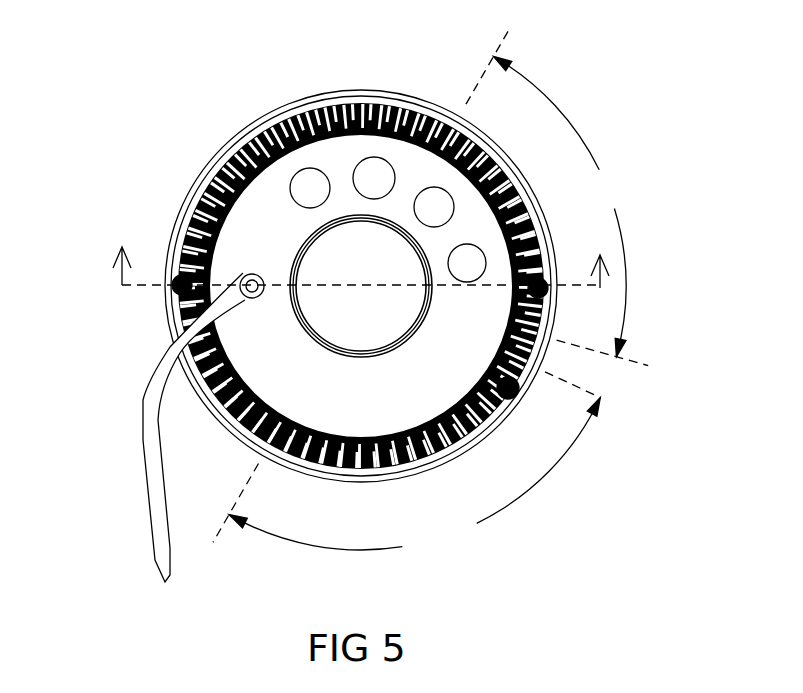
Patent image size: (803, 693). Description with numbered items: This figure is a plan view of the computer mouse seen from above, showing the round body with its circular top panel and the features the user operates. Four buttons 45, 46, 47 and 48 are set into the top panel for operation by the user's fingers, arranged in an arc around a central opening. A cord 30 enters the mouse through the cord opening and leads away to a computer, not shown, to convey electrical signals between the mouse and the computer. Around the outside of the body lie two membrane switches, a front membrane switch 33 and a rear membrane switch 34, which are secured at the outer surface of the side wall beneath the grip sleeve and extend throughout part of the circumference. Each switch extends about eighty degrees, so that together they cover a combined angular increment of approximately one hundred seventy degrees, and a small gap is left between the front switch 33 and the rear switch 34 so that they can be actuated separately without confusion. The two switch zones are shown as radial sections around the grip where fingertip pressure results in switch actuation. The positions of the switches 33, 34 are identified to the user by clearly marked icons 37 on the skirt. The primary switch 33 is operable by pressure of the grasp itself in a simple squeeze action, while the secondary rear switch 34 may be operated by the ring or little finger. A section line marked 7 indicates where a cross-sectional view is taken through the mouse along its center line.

The cord 30 is at (144, 446).
The front membrane switch 33 is at (557, 197).
The rear membrane switch 34 is at (406, 463).
The icons 37 is at (174, 288).
The button 45 is at (481, 251).
The button 46 is at (455, 200).
The button 47 is at (373, 157).
The button 48 is at (307, 168).
The section line of FIG. 7 is at (361, 252).